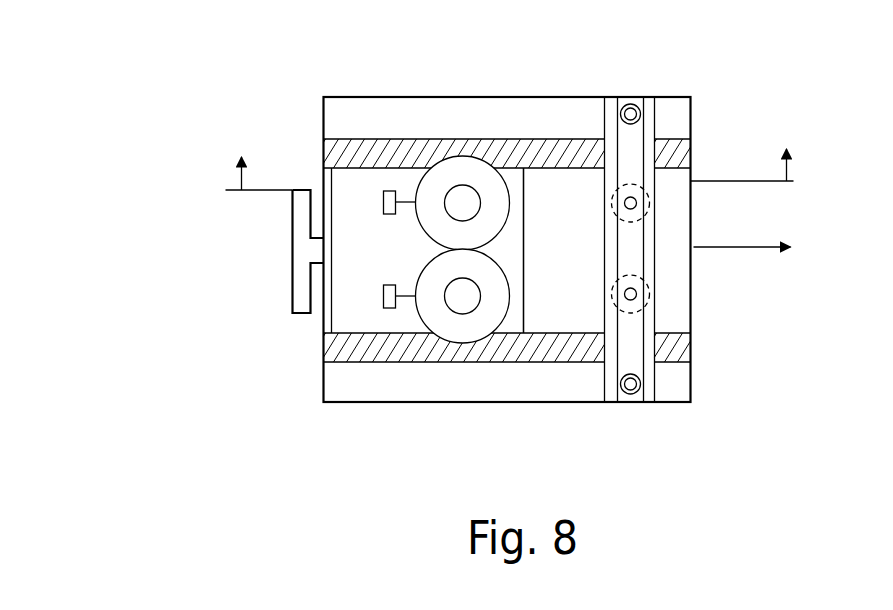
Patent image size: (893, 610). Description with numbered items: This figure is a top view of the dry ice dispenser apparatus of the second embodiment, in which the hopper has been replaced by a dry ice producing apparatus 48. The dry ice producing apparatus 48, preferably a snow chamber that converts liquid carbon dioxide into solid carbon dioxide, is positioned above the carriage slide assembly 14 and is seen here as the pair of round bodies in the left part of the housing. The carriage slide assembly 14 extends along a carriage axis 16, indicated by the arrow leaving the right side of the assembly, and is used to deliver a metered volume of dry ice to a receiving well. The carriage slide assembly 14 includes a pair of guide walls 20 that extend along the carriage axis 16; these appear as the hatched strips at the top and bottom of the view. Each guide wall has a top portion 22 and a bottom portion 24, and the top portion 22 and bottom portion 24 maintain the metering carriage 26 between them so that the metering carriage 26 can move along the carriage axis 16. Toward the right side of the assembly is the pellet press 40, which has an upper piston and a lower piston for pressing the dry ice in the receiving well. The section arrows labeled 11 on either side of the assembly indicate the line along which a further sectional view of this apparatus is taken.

The section line 11- 11 is at (514, 186).
The carriage slide assembly 14 is at (403, 366).
The carriage axis 16 is at (742, 231).
The guide walls 20 is at (693, 148).
The top portion 22 is at (418, 155).
The bottom portion 24 is at (565, 193).
The metering carriage 26 is at (516, 180).
The pellet press 40 is at (650, 84).
The dry ice producing apparatus 48 is at (435, 181).